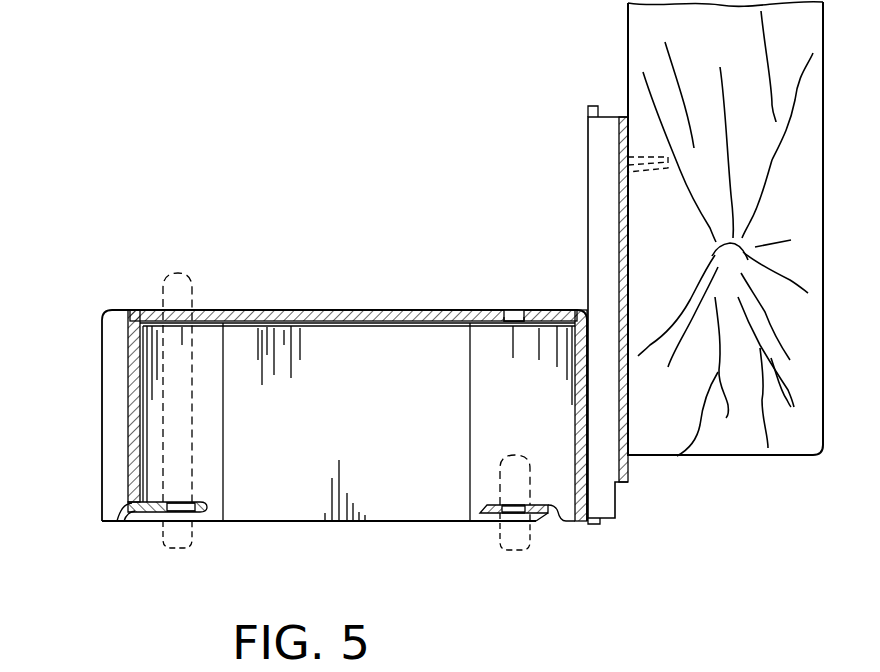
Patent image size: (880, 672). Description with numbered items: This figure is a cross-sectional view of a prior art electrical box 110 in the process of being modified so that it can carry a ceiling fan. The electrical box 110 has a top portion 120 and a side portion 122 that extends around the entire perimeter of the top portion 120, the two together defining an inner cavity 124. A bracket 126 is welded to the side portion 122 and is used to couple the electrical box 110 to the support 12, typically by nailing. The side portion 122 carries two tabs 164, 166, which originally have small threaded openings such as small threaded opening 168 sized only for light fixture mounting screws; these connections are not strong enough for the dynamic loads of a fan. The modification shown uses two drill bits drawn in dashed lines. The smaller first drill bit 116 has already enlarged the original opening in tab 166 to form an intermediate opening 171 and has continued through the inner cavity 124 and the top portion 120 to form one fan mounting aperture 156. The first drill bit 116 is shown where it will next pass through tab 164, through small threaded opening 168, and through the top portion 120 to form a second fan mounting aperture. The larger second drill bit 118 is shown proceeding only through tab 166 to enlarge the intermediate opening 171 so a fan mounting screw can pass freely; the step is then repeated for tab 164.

The support 12 is at (628, 52).
The electrical box 110 is at (98, 282).
The first drill bit 116 is at (193, 292).
The second drill bit 118 is at (532, 545).
The top portion 120 is at (382, 311).
The side portion 122 is at (130, 388).
The inner cavity 124 is at (313, 472).
The bracket 126 is at (588, 156).
The fan mounting aperture 156 is at (514, 316).
The tab 164 is at (205, 518).
The tab 166 is at (481, 520).
The small threaded opening 168 is at (178, 502).
The intermediate opening 171 is at (508, 505).